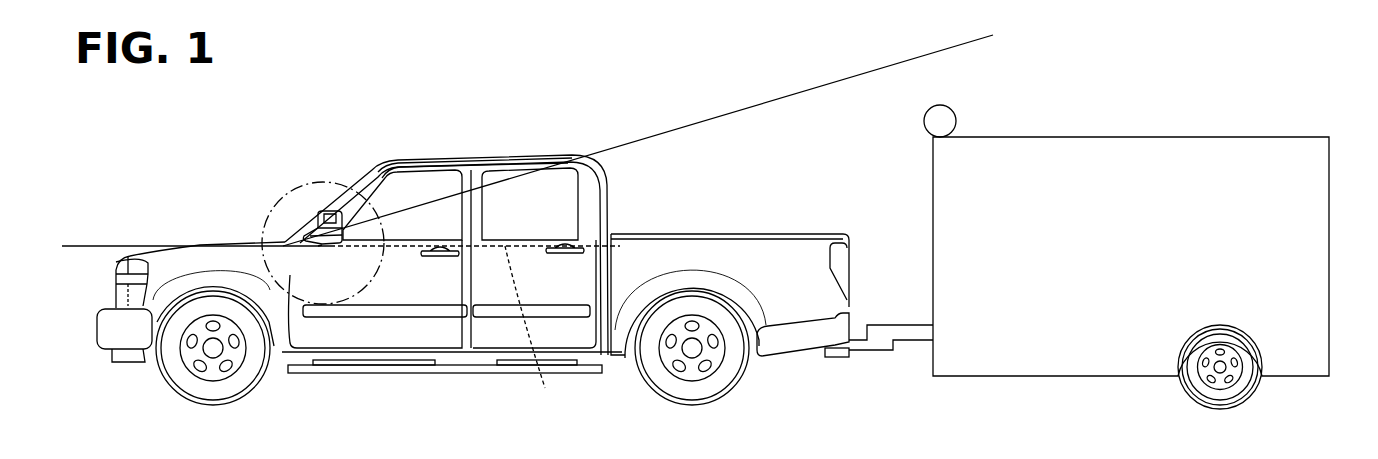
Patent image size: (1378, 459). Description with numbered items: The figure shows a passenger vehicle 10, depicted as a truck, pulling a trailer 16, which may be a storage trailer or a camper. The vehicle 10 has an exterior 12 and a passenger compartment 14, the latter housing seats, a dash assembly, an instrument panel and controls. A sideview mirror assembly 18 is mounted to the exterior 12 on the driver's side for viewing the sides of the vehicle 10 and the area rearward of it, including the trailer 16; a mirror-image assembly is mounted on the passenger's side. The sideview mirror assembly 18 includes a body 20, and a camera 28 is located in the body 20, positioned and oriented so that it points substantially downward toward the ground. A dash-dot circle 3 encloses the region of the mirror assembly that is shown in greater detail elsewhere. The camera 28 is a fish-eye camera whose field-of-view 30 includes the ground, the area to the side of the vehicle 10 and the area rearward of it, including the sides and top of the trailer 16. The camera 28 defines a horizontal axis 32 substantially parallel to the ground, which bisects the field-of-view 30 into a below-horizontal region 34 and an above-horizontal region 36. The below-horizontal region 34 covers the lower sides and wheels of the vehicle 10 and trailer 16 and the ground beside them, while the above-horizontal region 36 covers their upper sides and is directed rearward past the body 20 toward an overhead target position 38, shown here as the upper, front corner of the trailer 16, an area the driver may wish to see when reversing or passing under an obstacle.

The detail region shown in FIG. 3 is at (322, 182).
The vehicle 10 is at (460, 158).
The exterior 12 is at (520, 157).
The passenger compartment 14 is at (392, 161).
The trailer 16 is at (1330, 207).
The sideview mirror assembly 18 is at (322, 210).
The body 20 is at (306, 222).
The camera 28 is at (318, 246).
The field-of-view 30 is at (760, 106).
The horizontal axis 32 is at (532, 330).
The below-horizontal region 34 is at (417, 282).
The above-horizontal region 36 is at (470, 219).
The overhead target position 38 is at (957, 122).